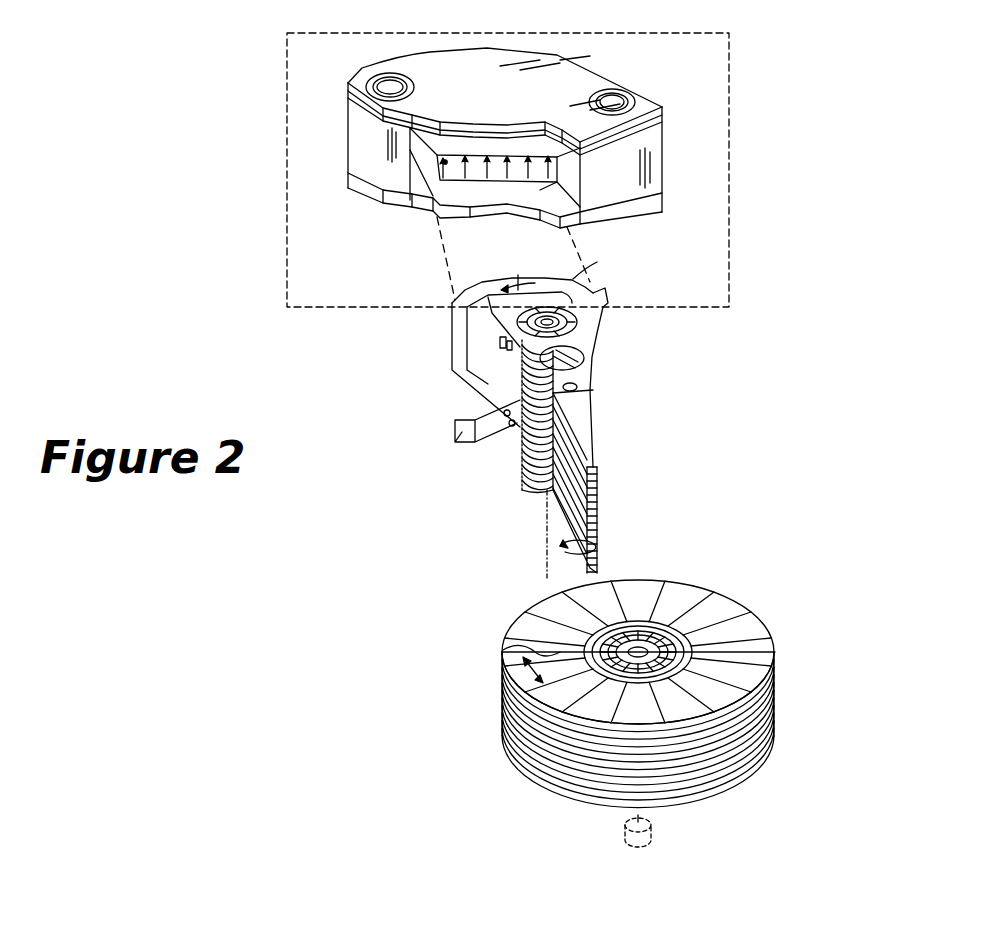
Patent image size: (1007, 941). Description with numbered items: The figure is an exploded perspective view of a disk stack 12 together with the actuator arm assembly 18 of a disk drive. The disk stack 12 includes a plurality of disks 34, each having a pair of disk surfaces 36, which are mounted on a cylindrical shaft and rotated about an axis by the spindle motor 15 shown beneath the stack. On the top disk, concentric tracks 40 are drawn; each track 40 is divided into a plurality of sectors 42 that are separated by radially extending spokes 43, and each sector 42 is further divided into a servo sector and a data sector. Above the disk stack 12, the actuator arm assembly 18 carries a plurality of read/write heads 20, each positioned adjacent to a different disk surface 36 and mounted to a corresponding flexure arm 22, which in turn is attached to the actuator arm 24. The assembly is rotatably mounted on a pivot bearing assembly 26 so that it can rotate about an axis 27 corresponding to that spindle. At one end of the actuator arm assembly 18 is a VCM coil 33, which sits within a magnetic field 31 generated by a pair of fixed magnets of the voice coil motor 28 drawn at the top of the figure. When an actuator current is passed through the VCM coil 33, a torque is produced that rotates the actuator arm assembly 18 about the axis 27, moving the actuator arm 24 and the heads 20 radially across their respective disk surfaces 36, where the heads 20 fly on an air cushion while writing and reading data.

The disk stack 12 is at (518, 578).
The spindle motor 15 is at (623, 830).
The actuator arm assembly 18 is at (703, 375).
The read/write head 20 is at (600, 467).
The flexure arm 22 is at (588, 425).
The actuator arm 24 is at (587, 367).
The pivot bearing assembly 26 is at (577, 320).
The axis 27 is at (547, 517).
The voice coil motor 28 is at (508, 170).
The magnetic field 31 is at (445, 162).
The VCM coil 33 is at (515, 322).
The disks 34 is at (672, 789).
The disk surfaces 36 is at (757, 663).
The tracks 40 is at (655, 622).
The sectors 42 is at (523, 680).
The spokes 43 is at (543, 647).